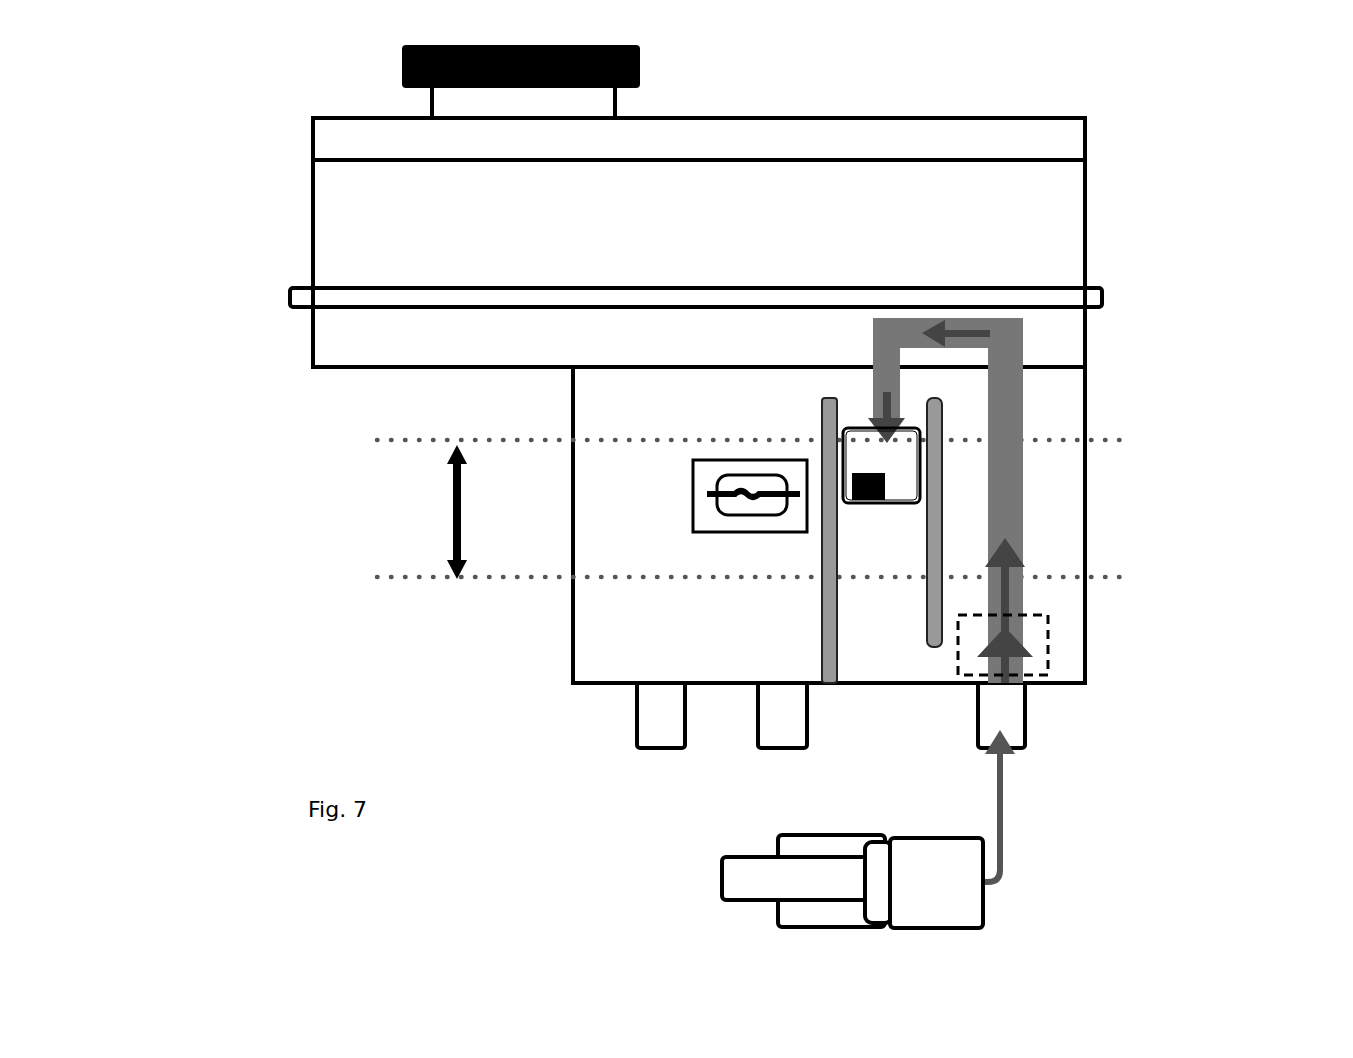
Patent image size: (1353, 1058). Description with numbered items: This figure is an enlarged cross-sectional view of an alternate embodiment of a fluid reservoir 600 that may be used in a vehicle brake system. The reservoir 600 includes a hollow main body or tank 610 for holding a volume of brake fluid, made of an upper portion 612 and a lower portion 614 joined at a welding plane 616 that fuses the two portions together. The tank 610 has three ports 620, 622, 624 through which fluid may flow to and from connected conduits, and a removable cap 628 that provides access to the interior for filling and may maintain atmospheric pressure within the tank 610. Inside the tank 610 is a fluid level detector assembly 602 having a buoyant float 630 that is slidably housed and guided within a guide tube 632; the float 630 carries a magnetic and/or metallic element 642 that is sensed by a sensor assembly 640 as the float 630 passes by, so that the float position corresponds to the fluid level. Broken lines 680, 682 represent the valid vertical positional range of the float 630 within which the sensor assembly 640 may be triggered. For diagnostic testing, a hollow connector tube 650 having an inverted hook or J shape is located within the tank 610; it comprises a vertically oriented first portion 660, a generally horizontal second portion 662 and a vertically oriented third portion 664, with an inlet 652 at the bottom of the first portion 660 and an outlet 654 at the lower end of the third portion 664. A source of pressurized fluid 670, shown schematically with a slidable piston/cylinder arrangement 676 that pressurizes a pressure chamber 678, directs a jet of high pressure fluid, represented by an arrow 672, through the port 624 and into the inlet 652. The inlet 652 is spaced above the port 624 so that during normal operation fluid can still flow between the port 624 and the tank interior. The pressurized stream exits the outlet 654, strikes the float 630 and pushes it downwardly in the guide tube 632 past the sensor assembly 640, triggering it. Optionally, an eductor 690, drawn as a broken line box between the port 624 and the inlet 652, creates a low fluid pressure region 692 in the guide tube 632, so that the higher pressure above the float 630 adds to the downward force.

The fluid reservoir 600 is at (1158, 114).
The fluid level detector assembly 602 is at (750, 412).
The tank 610 is at (1086, 222).
The upper portion 612 is at (350, 196).
The lower portion 614 is at (612, 389).
The welding plane 616 is at (291, 296).
The port 620 is at (650, 719).
The port 622 is at (780, 718).
The port 624 is at (1018, 715).
The removable cap 628 is at (641, 66).
The buoyant float 630 is at (892, 460).
The guide tube 632 is at (822, 598).
The sensor assembly 640 is at (700, 530).
The magnetic and/or metallic element 642 is at (887, 487).
The connector tube 650 is at (1022, 503).
The inlet 652 is at (1018, 655).
The outlet 654 is at (843, 420).
The first portion 660 is at (1022, 472).
The second portion 662 is at (962, 318).
The third portion 664 is at (872, 346).
The source of pressurized fluid 670 is at (887, 875).
The arrow 672 is at (1008, 795).
The slidable piston/cylinder arrangement 676 is at (880, 895).
The pressure chamber 678 is at (948, 887).
The broken line 680 is at (403, 445).
The broken line 682 is at (400, 580).
The eductor 690 is at (1048, 632).
The low fluid pressure region 692 is at (918, 657).